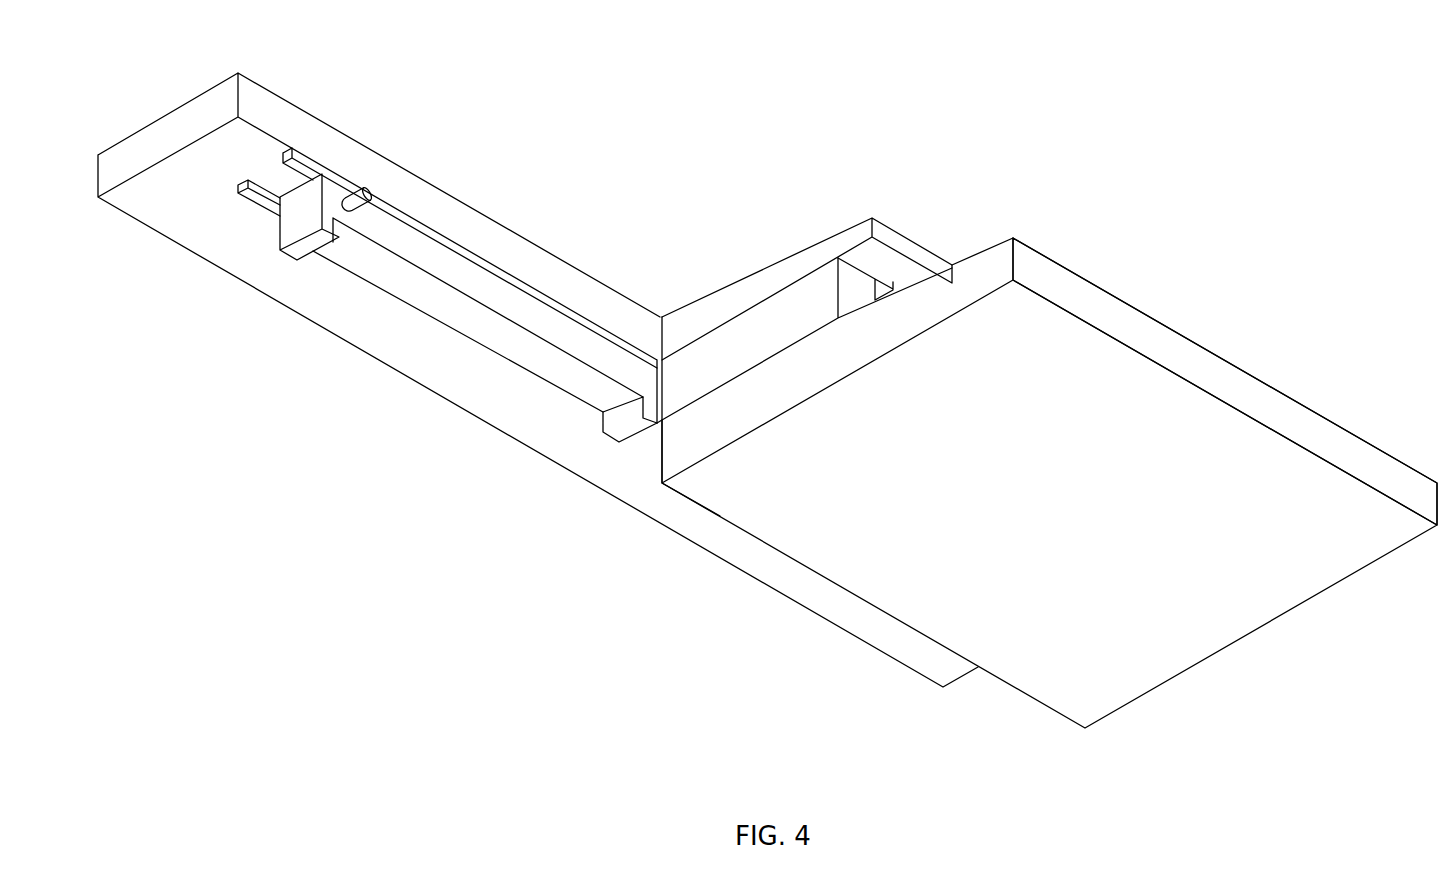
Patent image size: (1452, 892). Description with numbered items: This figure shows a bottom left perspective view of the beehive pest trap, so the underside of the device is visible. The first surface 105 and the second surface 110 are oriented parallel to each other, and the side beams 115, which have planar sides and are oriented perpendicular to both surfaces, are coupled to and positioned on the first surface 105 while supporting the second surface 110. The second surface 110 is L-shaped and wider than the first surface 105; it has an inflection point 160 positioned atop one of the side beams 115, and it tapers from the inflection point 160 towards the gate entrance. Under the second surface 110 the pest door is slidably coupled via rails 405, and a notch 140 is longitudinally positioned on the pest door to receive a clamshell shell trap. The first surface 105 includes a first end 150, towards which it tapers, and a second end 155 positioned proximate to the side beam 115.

The first surface 105 is at (1052, 510).
The second surface 110 is at (232, 70).
The side beams 115 is at (757, 358).
The notch 140 is at (603, 413).
The first end 150 is at (1018, 287).
The second end 155 is at (676, 481).
The inflection point 160 is at (665, 306).
The rails 405 is at (255, 203).